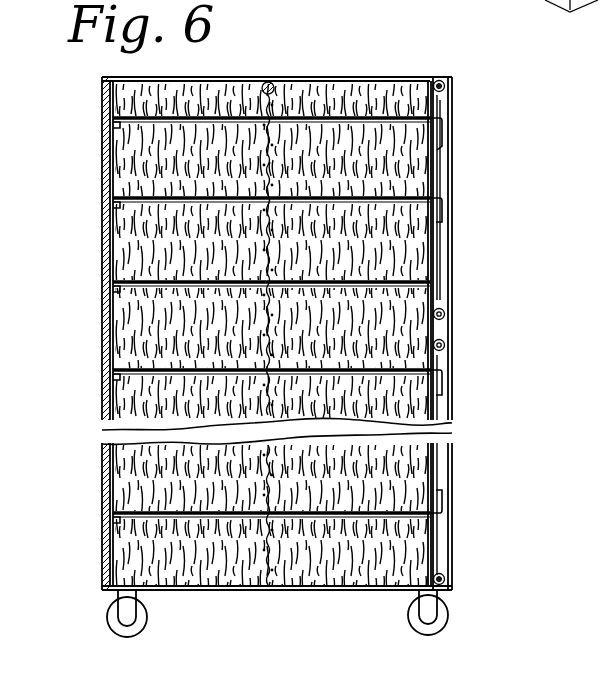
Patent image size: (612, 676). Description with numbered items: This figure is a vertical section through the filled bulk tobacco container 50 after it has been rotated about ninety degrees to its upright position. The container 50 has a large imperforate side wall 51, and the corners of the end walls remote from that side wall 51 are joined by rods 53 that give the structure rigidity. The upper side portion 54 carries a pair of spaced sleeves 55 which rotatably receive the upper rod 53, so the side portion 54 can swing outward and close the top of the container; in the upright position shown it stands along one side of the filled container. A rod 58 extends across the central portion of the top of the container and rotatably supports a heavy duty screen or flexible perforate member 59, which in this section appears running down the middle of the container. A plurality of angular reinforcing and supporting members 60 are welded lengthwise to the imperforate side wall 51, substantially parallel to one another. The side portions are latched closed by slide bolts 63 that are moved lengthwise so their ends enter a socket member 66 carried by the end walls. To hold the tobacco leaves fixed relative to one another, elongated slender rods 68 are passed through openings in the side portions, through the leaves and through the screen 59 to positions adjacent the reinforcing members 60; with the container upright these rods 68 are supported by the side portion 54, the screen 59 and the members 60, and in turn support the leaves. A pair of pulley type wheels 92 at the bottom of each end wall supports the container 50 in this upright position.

The bulk tobacco container 50 is at (453, 178).
The imperforate side wall 51 is at (102, 258).
The rods 53 is at (441, 80).
The upper side portion 54 is at (436, 152).
The sleeves 55 is at (428, 460).
The rod 58 is at (269, 82).
The screen or flexible perforate member 59 is at (268, 560).
The angular reinforcing and supporting members 60 is at (116, 381).
The slide bolt 63 is at (445, 341).
The socket member 66 is at (441, 304).
The elongated slender rods 68 is at (442, 212).
The pulley type wheels 92 is at (110, 616).